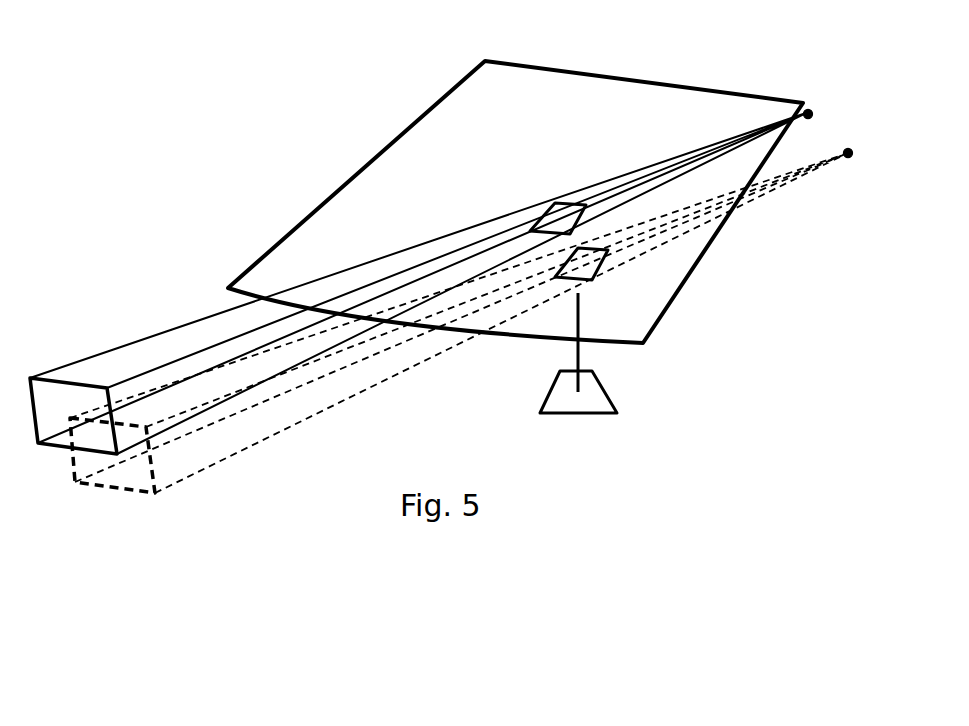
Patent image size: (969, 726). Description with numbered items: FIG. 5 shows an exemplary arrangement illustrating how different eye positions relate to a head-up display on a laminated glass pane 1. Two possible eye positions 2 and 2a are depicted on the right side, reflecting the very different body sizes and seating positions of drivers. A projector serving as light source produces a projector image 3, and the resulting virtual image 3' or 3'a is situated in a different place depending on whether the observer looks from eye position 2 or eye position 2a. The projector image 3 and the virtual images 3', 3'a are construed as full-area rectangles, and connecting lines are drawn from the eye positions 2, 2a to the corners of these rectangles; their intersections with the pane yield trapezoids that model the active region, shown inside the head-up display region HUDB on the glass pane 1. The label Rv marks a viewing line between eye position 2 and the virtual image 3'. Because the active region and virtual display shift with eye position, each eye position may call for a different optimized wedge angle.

The glass pane 1 is at (316, 192).
The eye position 2 is at (812, 103).
The eye position 2a is at (848, 175).
The projector image 3 is at (663, 330).
The virtual image 3' is at (418, 283).
The virtual image 3'a is at (459, 391).
The head-up display region HUDB is at (546, 213).
The viewing direction / view ray Rv is at (181, 309).